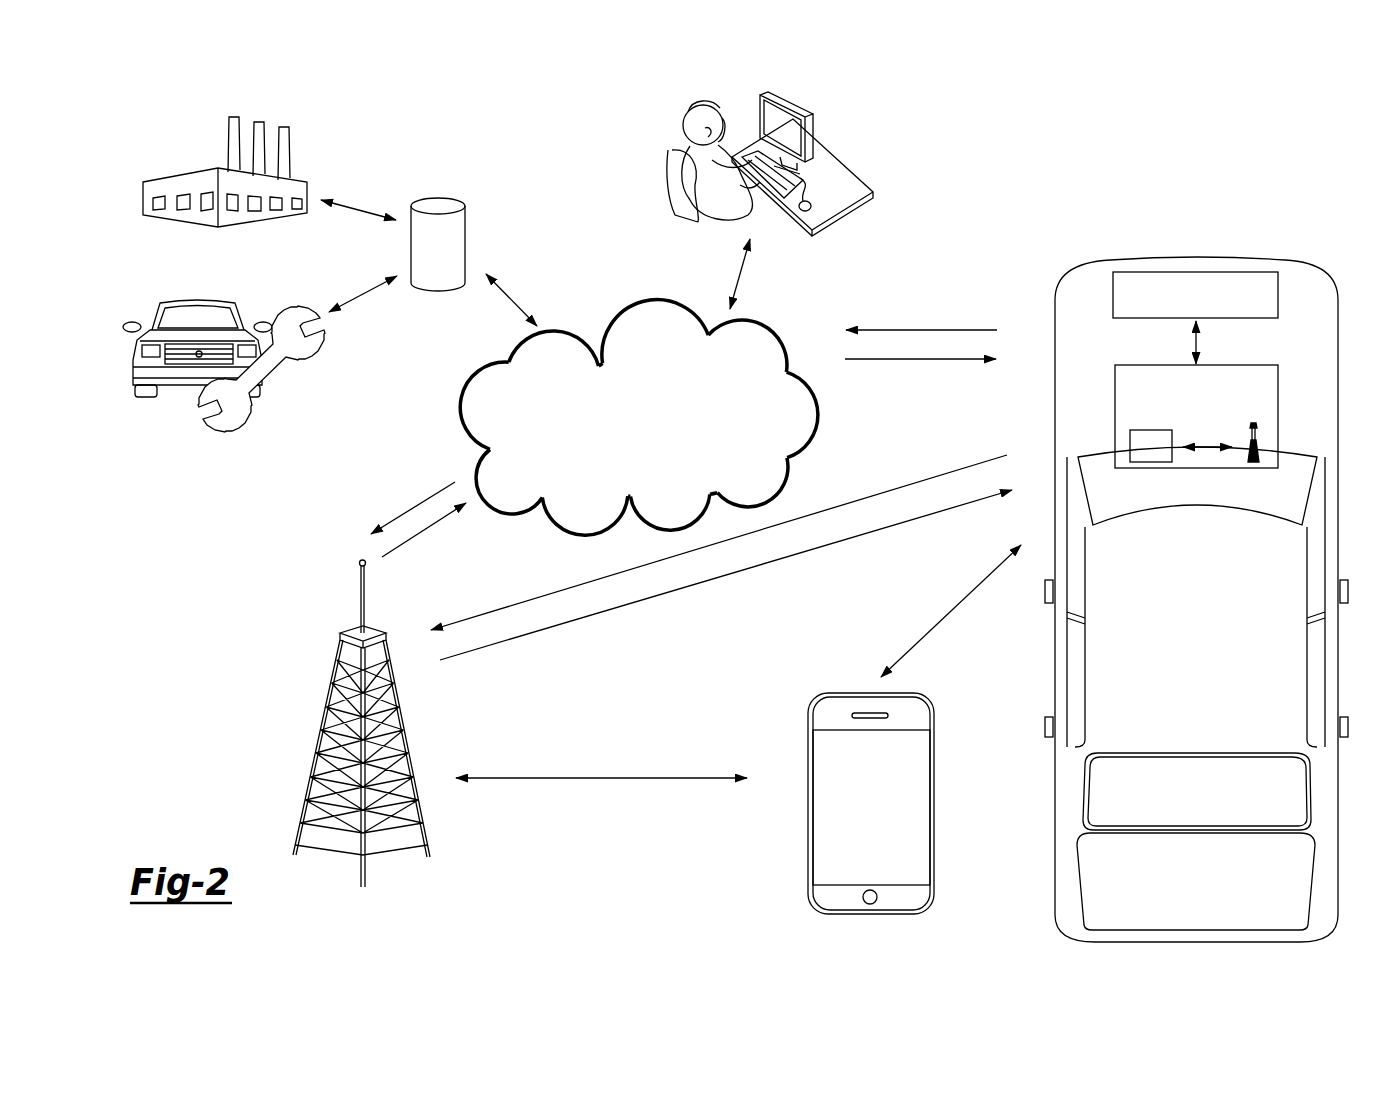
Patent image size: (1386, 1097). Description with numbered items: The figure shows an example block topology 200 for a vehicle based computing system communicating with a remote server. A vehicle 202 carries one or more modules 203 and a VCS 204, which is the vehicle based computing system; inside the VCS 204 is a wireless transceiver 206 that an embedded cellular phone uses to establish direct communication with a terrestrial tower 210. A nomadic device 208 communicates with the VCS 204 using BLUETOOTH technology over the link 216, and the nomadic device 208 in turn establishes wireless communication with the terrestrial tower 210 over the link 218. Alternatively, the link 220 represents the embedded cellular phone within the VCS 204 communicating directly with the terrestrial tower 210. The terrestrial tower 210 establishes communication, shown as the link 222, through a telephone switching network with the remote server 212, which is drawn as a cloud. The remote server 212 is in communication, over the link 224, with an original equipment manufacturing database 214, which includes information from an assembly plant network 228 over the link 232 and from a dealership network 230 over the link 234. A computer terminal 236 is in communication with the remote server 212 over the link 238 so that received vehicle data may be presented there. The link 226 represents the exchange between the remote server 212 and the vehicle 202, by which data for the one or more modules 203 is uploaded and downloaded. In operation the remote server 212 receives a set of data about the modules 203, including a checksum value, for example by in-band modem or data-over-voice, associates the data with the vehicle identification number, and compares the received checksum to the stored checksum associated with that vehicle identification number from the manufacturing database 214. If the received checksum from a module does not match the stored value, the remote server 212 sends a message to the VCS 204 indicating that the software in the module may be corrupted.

The vehicle communication system 200 is at (1272, 128).
The vehicle 202 is at (1332, 283).
The modules 203 is at (1198, 270).
The VCS 204 is at (1278, 375).
The wireless transceiver 206 is at (1258, 444).
The nomadic device 208 is at (806, 745).
The terrestrial tower 210 is at (361, 595).
The remote server 212 is at (636, 330).
The original equipment manufacturing database 214 is at (441, 204).
The communication link between mobile device and vehicle 216 is at (943, 613).
The communication link between tower and mobile device 218 is at (597, 776).
The communication link between tower and vehicle 220 is at (901, 486).
The communication link between tower and network 222 is at (418, 502).
The communication link between database and network 224 is at (510, 300).
The communication link between network and vehicle 226 is at (924, 330).
The assembly plant network 228 is at (170, 179).
The dealership network 230 is at (168, 300).
The communication link between manufacturer and database 232 is at (361, 211).
The communication link between dealer and database 234 is at (367, 289).
The computer terminal 236 is at (857, 168).
The communication link between operator and network 238 is at (738, 272).